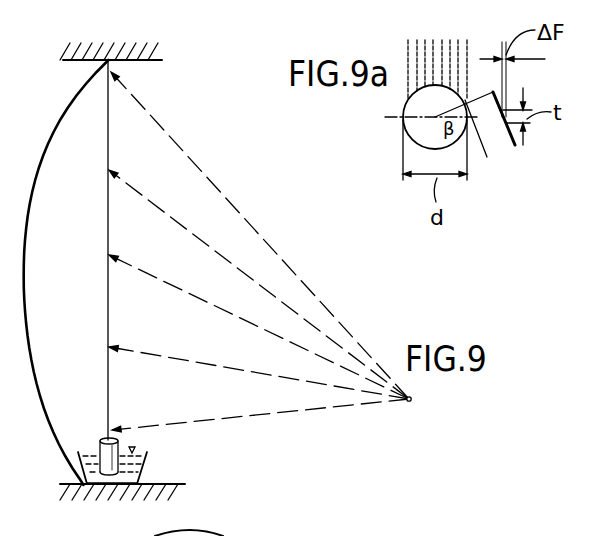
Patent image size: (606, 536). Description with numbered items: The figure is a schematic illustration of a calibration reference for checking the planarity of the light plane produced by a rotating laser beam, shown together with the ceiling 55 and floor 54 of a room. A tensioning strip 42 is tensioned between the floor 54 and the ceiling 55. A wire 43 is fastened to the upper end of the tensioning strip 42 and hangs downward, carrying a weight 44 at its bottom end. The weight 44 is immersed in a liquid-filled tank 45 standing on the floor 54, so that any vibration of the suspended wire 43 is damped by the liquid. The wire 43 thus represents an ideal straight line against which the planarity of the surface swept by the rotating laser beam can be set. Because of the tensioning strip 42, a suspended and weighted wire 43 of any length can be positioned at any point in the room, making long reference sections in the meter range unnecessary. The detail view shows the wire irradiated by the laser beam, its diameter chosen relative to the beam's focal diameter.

The tensioning strip 42 is at (25, 298).
The wire 43 is at (108, 305).
The weight 44 is at (77, 457).
The liquid-filled tank 45 is at (142, 469).
The floor 54 is at (90, 487).
The ceiling 55 is at (136, 57).